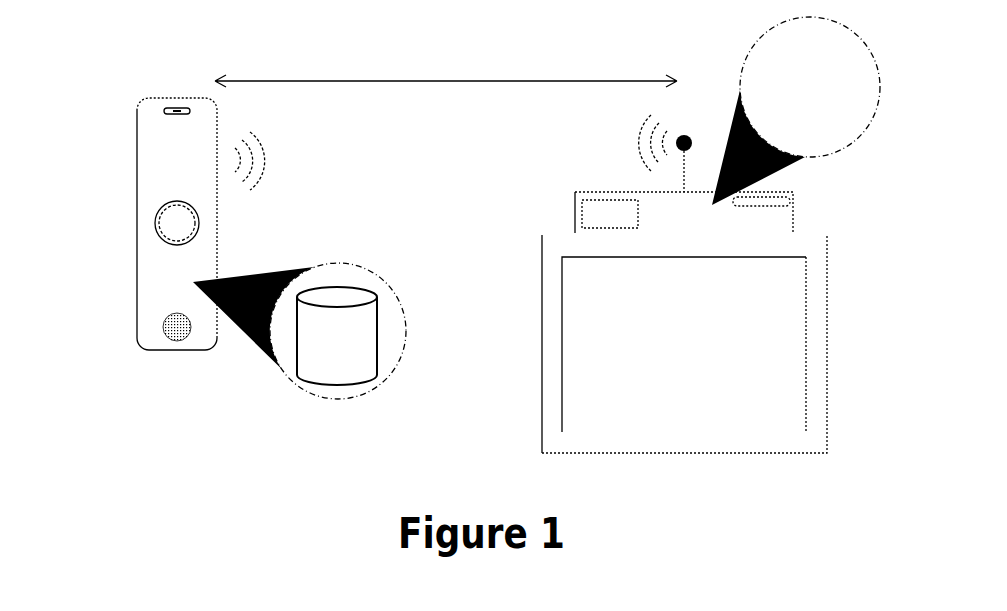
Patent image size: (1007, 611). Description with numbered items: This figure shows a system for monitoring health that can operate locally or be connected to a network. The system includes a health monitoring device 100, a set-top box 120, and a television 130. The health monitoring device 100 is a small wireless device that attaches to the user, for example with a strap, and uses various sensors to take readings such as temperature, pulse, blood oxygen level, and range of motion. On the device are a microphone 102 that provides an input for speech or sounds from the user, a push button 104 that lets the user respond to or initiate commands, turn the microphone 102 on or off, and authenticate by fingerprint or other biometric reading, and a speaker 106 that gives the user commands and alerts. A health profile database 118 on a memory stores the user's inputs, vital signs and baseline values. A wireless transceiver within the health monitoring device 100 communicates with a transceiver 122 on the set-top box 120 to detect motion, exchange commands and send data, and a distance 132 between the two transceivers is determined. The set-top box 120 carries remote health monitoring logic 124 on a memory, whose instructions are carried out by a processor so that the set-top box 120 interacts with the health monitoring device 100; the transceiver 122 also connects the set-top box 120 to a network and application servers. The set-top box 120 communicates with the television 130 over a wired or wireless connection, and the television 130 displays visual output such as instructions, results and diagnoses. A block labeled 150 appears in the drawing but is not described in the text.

The health monitoring device 100 is at (177, 98).
The microphone 102 is at (182, 106).
The push button 104 is at (177, 202).
The speaker 106 is at (175, 340).
The health profile database 118 is at (330, 383).
The set-top box 120 is at (575, 213).
The transceiver 122 is at (680, 135).
The remote health monitoring logic 124 is at (768, 82).
The television 130 is at (541, 372).
The distance 132 is at (437, 82).
The processor 150 is at (610, 214).